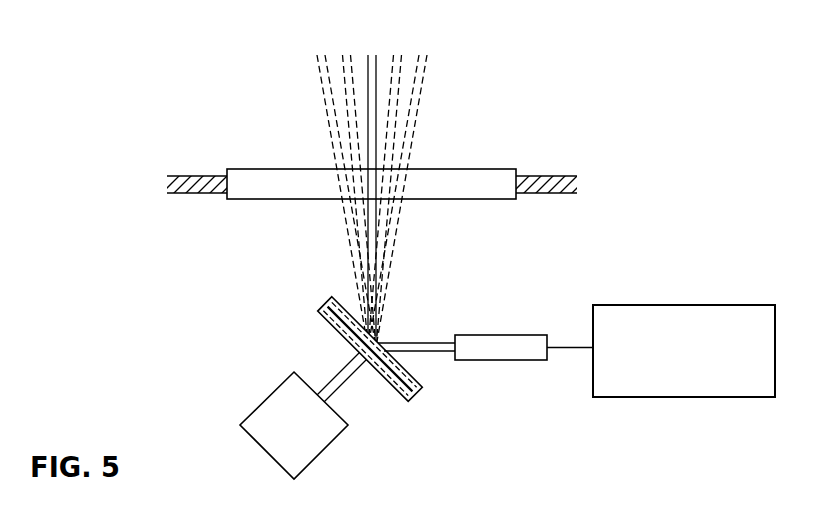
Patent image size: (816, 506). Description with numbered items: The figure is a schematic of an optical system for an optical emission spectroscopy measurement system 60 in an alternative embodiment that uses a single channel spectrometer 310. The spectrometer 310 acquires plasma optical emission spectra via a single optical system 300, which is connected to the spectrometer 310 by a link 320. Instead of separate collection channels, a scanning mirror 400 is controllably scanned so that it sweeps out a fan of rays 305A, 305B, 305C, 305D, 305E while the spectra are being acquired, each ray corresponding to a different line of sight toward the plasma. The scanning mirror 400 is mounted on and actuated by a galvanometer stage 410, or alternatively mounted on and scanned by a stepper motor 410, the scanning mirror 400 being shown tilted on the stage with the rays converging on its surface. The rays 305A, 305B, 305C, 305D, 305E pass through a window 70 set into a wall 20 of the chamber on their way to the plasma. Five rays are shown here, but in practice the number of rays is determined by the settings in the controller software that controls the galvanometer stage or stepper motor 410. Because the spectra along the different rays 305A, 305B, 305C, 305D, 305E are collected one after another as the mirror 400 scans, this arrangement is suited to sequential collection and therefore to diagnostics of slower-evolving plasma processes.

The imaging system 60 is at (163, 115).
The window 70 is at (502, 168).
The housing wall 20 is at (190, 192).
The ray 305A is at (322, 88).
The ray 305B is at (343, 68).
The ray 305C is at (377, 75).
The ray 305D is at (398, 78).
The ray 305E is at (422, 97).
The scanning mirror 400 is at (320, 305).
The galvanometer stage 410 is at (265, 398).
The optical system 300 is at (497, 333).
The single channel spectrometer 310 is at (701, 360).
The control line 320 is at (568, 349).